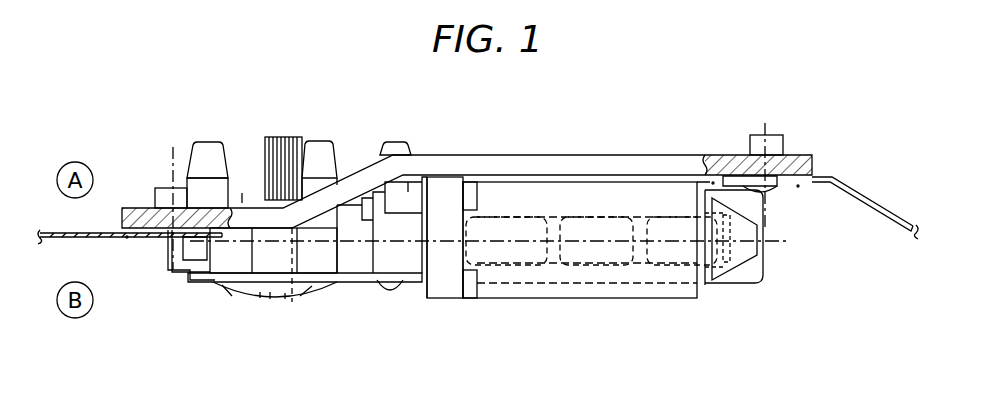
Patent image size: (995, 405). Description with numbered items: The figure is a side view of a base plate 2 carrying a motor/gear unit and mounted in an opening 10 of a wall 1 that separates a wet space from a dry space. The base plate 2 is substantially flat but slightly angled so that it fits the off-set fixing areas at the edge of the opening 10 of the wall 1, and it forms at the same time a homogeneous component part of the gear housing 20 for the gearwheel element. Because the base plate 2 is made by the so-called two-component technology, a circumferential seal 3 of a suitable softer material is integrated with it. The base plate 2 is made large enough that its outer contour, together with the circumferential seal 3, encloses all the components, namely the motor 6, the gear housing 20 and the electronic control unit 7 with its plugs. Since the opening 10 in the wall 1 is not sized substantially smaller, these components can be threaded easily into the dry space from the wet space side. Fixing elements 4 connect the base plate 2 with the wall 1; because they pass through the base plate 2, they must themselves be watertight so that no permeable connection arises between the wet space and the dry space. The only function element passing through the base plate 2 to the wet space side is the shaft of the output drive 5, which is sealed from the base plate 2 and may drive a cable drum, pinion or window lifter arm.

The wall 1 is at (872, 210).
The base plate 2 is at (523, 165).
The circumferential seal 3 is at (126, 245).
The fixing elements 4 is at (773, 143).
The output drive 5 is at (287, 143).
The motor 6 is at (655, 290).
The electronic control unit 7 is at (752, 273).
The opening 10 is at (712, 184).
The gear housing 20 is at (230, 260).